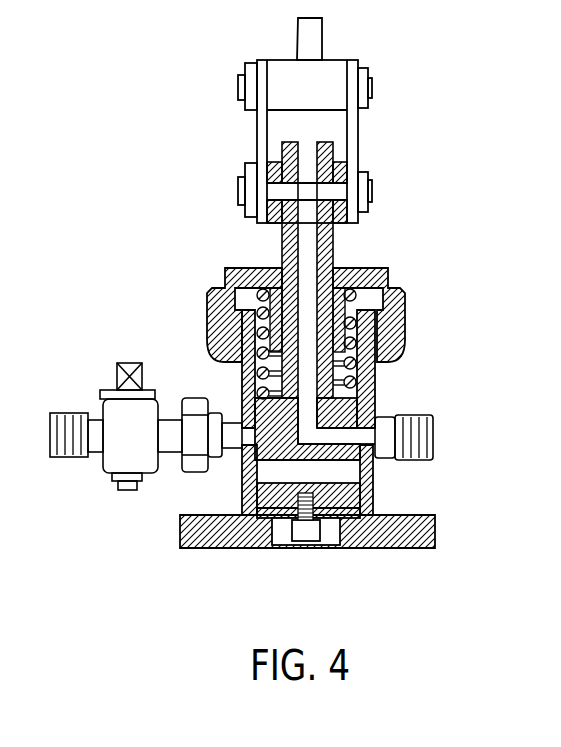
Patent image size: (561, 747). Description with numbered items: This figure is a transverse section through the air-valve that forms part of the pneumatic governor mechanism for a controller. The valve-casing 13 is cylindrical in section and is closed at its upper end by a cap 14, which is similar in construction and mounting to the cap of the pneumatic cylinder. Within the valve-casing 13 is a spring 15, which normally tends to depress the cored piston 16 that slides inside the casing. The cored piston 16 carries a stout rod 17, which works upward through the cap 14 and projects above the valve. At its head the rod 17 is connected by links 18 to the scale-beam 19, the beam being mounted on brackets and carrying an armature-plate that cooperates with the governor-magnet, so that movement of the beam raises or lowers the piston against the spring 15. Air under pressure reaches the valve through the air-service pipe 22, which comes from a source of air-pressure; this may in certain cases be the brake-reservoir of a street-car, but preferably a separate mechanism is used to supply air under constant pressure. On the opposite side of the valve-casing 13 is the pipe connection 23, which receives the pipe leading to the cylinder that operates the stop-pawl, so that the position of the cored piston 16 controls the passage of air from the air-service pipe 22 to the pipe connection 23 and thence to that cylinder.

The valve-casing 13 is at (375, 372).
The cap 14 is at (400, 325).
The spring 15 is at (345, 297).
The cored piston 16 is at (374, 403).
The rod 17 is at (330, 258).
The links 18 is at (355, 137).
The scale-beam 19 is at (313, 40).
The air-service pipe 22 is at (225, 415).
The pipe connection 23 is at (433, 432).